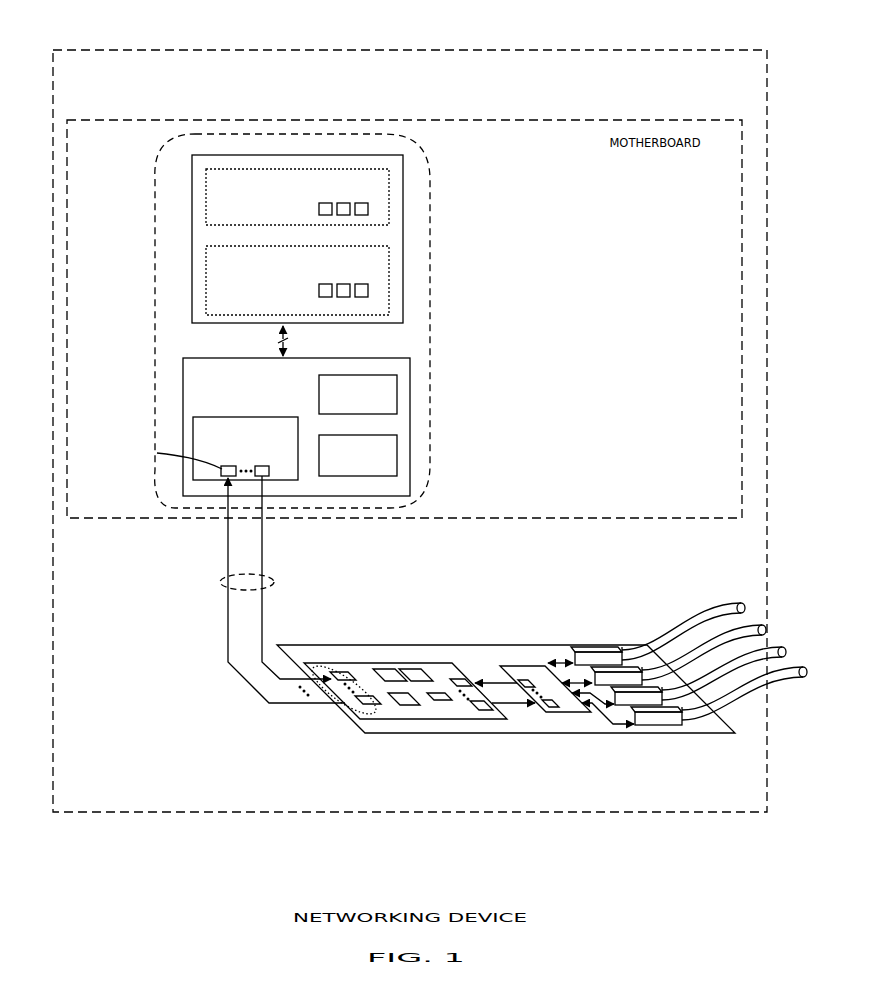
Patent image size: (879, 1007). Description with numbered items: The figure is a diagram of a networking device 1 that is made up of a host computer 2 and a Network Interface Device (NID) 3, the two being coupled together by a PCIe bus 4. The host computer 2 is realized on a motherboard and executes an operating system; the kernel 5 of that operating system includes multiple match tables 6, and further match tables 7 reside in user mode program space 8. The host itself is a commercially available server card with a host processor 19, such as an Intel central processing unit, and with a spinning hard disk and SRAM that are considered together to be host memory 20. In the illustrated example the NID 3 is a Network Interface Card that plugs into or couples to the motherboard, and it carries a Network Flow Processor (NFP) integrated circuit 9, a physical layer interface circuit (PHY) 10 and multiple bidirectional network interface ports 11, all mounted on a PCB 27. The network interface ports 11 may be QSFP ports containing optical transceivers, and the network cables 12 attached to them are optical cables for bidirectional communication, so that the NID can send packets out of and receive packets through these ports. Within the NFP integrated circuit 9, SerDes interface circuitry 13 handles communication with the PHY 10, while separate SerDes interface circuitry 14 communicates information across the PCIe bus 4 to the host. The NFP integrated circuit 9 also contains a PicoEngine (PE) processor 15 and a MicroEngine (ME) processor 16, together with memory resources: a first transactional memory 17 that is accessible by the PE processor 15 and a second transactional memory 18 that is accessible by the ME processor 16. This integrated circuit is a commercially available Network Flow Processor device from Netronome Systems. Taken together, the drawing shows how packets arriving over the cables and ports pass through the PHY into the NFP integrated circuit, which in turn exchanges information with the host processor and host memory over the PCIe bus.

The networking device 1 is at (414, 50).
The host computer 2 is at (186, 135).
The Network Interface Device (NID) 3 is at (539, 667).
The PCIe bus 4 is at (220, 582).
The kernel 5 is at (297, 280).
The match tables 6 is at (379, 297).
The match tables 7 is at (379, 203).
The user mode program space 8 is at (297, 197).
The Network Flow Processor (NFP) integrated circuit 9 is at (316, 663).
The physical layer interface circuit (PHY) 10 is at (534, 666).
The bidirectional network interface ports 11 is at (642, 732).
The network cables 12 is at (713, 607).
The SerDes interface circuitry 13 is at (482, 713).
The SerDes interface circuitry 14 is at (340, 708).
The PicoEngine (PE) processor 15 is at (440, 701).
The MicroEngine (ME) processor 16 is at (405, 706).
The first transactional memory 17 is at (412, 669).
The second transactional memory 18 is at (380, 669).
The host processor 19 is at (258, 427).
The host memory 20 is at (403, 231).
The PCB 27 is at (516, 734).